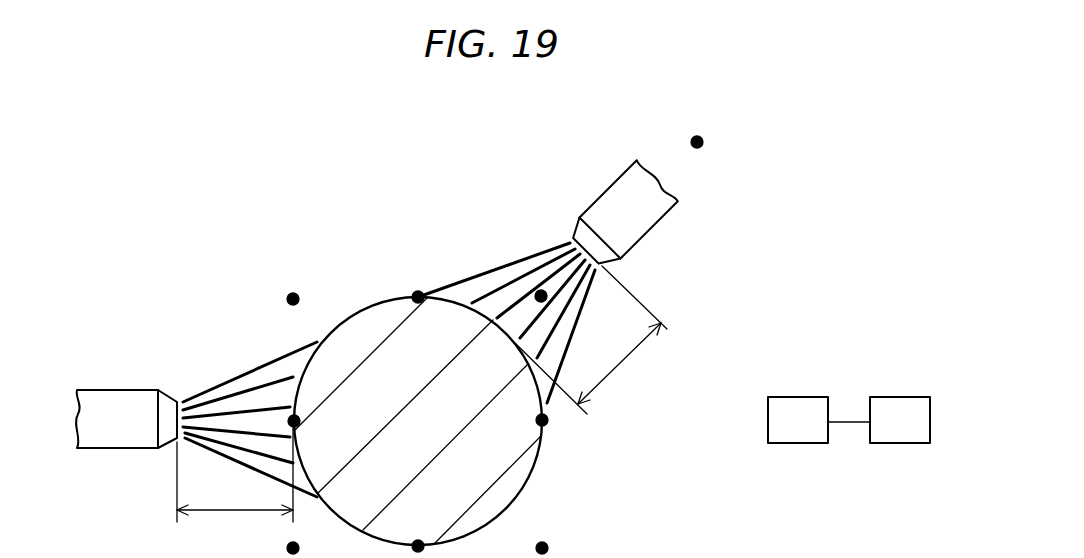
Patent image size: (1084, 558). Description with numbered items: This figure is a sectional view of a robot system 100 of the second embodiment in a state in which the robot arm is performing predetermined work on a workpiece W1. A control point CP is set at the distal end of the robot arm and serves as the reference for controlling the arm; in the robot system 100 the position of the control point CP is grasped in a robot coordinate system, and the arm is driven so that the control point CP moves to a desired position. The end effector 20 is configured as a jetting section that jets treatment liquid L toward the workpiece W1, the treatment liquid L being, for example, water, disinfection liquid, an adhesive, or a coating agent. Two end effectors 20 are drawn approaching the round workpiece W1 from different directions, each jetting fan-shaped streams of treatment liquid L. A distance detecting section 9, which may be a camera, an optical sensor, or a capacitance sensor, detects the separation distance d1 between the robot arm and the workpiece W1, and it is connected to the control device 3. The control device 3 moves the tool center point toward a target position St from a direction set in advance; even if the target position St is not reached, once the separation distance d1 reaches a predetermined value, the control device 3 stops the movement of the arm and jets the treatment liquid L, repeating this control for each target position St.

The robot system 100 is at (300, 156).
The end effector 20 is at (122, 405).
The control point CP is at (703, 141).
The target position St is at (491, 318).
The treatment liquid L is at (236, 375).
The workpiece W1 is at (510, 473).
The separation distance d1 is at (422, 403).
The distance detecting section 9 is at (800, 446).
The control device 3 is at (902, 446).